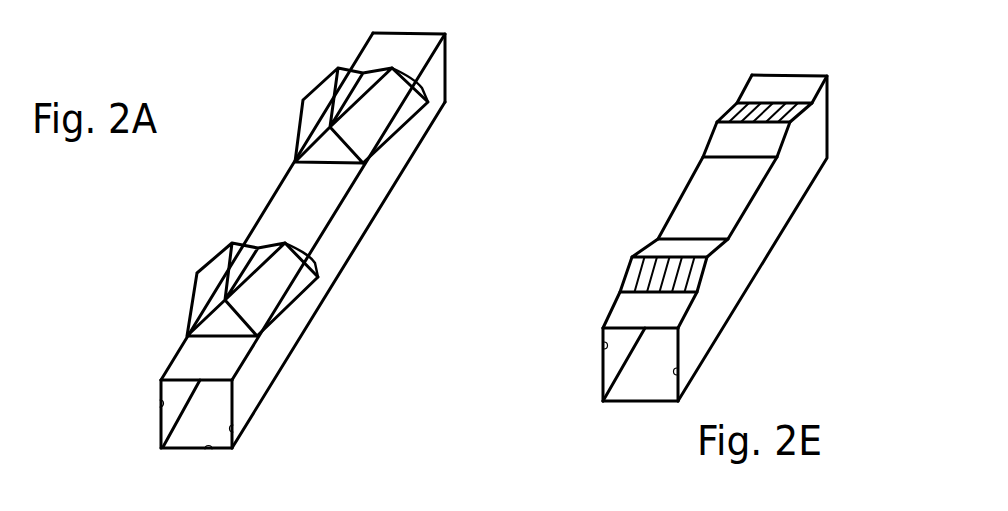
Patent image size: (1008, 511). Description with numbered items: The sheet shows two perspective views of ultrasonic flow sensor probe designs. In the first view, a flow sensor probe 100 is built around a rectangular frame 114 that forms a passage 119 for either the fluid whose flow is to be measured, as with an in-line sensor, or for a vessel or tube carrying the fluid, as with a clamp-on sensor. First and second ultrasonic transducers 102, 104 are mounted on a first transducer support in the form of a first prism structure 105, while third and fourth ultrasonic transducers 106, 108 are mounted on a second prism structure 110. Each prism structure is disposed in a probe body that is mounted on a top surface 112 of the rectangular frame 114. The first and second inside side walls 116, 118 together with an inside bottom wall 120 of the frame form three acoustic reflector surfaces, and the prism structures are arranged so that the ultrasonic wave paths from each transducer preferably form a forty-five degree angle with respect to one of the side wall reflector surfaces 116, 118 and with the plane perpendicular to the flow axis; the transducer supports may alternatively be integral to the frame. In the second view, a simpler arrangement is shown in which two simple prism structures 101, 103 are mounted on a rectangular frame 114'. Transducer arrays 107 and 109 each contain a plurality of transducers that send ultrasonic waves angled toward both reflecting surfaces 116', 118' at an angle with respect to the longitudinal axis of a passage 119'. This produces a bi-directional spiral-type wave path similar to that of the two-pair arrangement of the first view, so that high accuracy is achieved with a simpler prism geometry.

In FIG. 2A, the flow sensor probe 100 is at (424, 182).
In FIG. 2A, the first ultrasonic transducer 102 is at (202, 288).
In FIG. 2A, the second ultrasonic transducer 104 is at (272, 300).
In FIG. 2A, the first prism structure 105 is at (303, 294).
In FIG. 2A, the third ultrasonic transducer 106 is at (336, 70).
In FIG. 2A, the fourth ultrasonic transducer 108 is at (422, 88).
In FIG. 2A, the second prism structure 110 is at (405, 128).
In FIG. 2A, the top surface 112 is at (208, 363).
In FIG. 2A, the rectangular frame 114 is at (466, 60).
In FIG. 2A, the first inside side wall 116 is at (89, 414).
In FIG. 2A, the second inside side wall 118 is at (288, 431).
In FIG. 2A, the passage 119 is at (153, 440).
In FIG. 2A, the inside bottom wall 120 is at (212, 448).
In FIG. 2E, the transducer array 109 is at (755, 112).
In FIG. 2E, the simple prism structure 103 is at (798, 127).
In FIG. 2E, the rectangular frame 114' is at (741, 238).
In FIG. 2E, the simple prism structure 101 is at (713, 262).
In FIG. 2E, the transducer array 107 is at (670, 273).
In FIG. 2E, the reflecting surface 116' is at (565, 364).
In FIG. 2E, the reflecting surface 118' is at (745, 366).
In FIG. 2E, the passage 119' is at (604, 396).